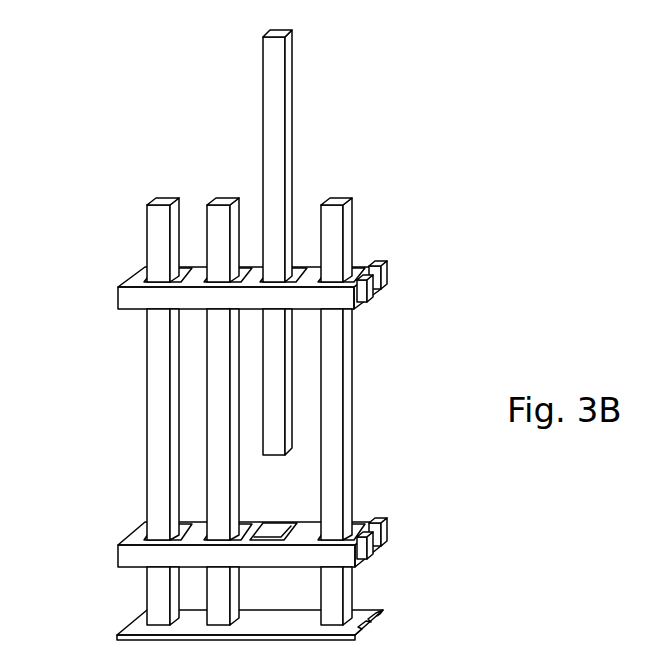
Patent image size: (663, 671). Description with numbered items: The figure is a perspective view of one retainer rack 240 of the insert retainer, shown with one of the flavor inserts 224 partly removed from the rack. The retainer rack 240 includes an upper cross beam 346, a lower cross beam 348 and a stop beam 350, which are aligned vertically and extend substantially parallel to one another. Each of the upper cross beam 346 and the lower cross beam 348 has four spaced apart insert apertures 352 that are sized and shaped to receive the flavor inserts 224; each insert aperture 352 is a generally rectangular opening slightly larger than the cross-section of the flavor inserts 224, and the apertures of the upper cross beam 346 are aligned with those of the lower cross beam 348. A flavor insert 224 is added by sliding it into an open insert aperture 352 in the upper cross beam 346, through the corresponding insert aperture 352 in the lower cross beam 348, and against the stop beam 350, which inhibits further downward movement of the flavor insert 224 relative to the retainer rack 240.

The flavor insert 224 is at (275, 97).
The retainer rack 240 is at (382, 258).
The upper cross beam 346 is at (128, 297).
The lower cross beam 348 is at (123, 552).
The stop beam 350 is at (130, 624).
The insert aperture 352 is at (339, 496).